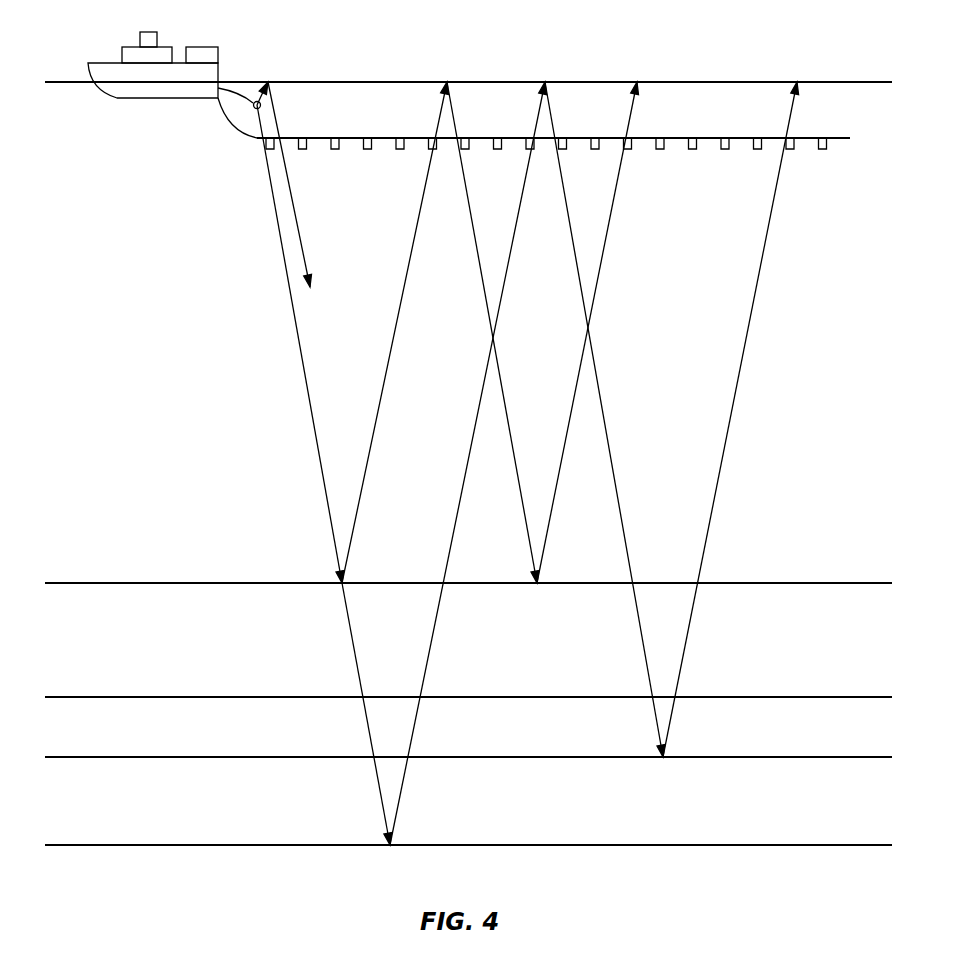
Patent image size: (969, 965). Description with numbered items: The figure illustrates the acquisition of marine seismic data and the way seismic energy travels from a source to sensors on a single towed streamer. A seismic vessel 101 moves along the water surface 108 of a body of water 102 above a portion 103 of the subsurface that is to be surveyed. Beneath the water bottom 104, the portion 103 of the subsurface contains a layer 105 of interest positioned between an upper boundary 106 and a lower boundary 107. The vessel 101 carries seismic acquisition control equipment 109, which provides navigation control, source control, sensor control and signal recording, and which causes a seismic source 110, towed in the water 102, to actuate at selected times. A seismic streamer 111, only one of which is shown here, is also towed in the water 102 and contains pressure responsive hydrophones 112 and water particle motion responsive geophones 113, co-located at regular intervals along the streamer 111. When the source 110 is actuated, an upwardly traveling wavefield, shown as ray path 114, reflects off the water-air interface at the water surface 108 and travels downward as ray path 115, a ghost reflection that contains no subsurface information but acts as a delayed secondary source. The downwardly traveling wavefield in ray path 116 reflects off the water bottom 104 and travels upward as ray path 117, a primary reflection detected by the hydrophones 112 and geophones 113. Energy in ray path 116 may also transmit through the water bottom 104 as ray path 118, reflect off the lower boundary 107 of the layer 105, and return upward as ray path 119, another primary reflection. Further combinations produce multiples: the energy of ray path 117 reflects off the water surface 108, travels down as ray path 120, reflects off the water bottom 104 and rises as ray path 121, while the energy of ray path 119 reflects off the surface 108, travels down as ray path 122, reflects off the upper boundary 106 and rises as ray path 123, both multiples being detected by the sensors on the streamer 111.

The seismic vessel 101 is at (150, 31).
The body of water 102 is at (198, 357).
The portion of the subsurface 103 is at (216, 659).
The water bottom 104 is at (165, 583).
The layer 105 is at (557, 814).
The upper boundary 106 is at (163, 757).
The lower boundary 107 is at (163, 845).
The water surface 108 is at (597, 82).
The seismic acquisition control equipment 109 is at (204, 47).
The seismic source 110 is at (255, 112).
The seismic streamer 111 is at (705, 137).
The hydrophones 112 is at (375, 137).
The geophones 113 is at (407, 137).
The ray path 114 is at (250, 107).
The ray path 115 is at (297, 217).
The ray path 116 is at (307, 390).
The ray path 117 is at (384, 388).
The ray path 118 is at (353, 650).
The ray path 119 is at (429, 650).
The ray path 120 is at (528, 540).
The ray path 121 is at (547, 540).
The ray path 122 is at (643, 650).
The ray path 123 is at (685, 650).